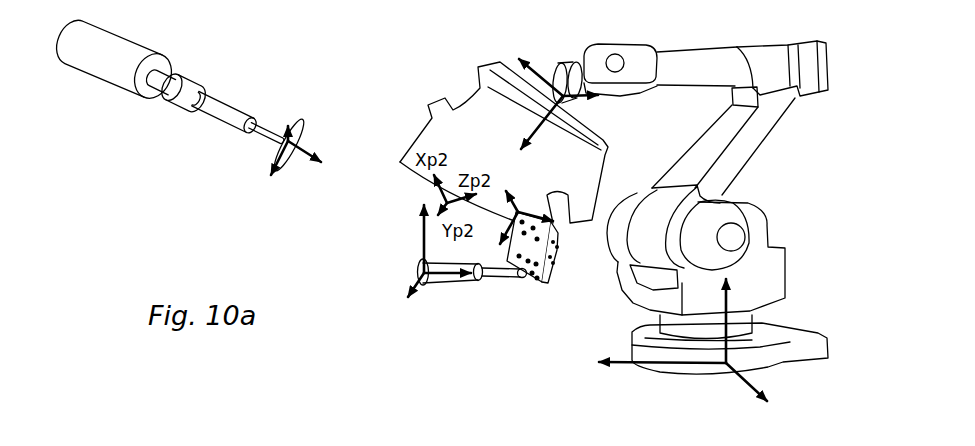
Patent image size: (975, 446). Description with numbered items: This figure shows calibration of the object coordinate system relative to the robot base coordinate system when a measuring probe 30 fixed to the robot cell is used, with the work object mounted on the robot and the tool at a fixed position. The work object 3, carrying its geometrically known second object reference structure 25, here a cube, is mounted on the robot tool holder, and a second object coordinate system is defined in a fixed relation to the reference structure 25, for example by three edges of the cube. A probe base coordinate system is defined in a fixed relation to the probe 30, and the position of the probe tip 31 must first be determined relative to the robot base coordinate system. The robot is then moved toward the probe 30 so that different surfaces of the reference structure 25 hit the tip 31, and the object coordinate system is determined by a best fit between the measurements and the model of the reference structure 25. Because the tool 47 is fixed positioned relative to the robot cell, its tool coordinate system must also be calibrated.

The work object 3 is at (588, 172).
The second object reference structure 25 is at (537, 289).
The measuring probe 30 is at (447, 281).
The tip 31 is at (522, 282).
The tool 47 is at (305, 129).